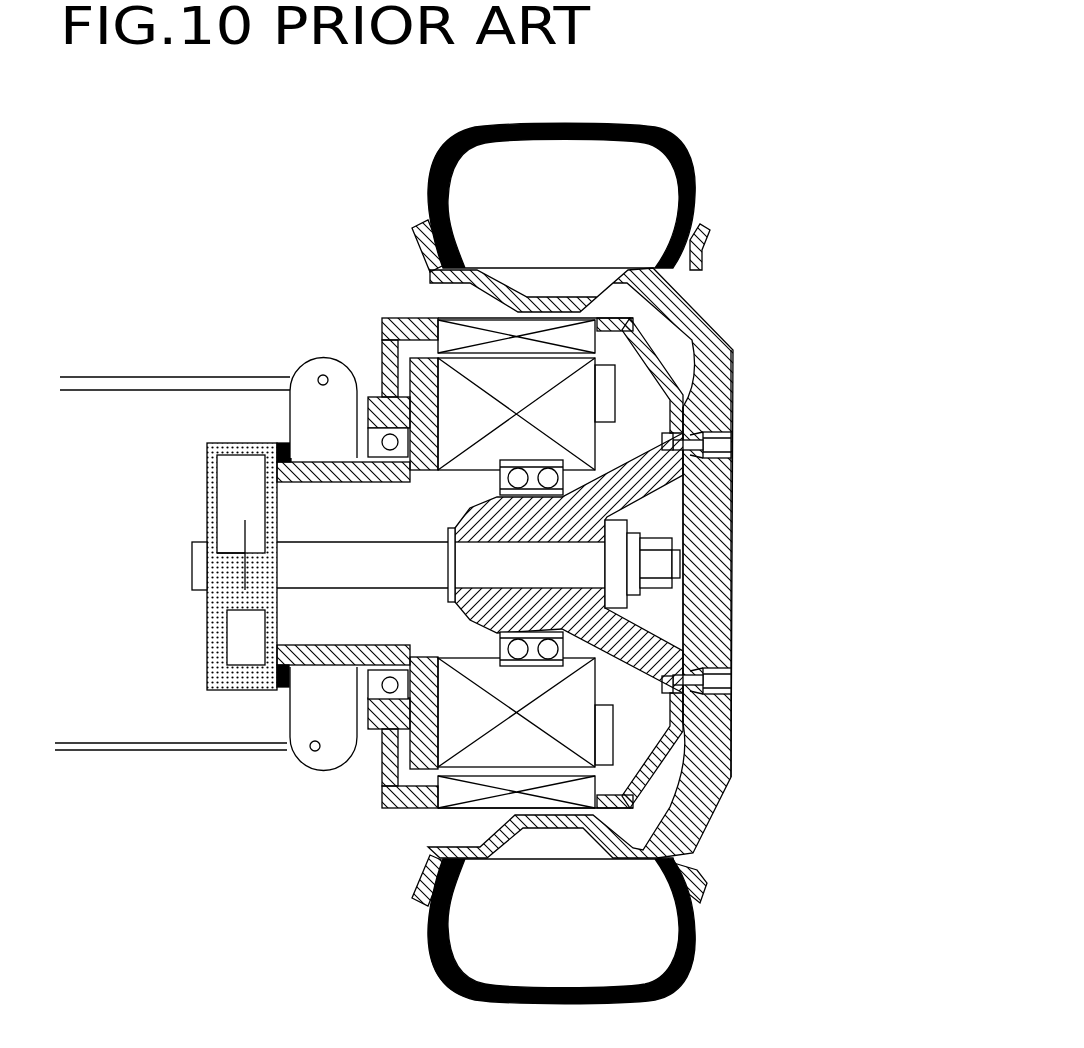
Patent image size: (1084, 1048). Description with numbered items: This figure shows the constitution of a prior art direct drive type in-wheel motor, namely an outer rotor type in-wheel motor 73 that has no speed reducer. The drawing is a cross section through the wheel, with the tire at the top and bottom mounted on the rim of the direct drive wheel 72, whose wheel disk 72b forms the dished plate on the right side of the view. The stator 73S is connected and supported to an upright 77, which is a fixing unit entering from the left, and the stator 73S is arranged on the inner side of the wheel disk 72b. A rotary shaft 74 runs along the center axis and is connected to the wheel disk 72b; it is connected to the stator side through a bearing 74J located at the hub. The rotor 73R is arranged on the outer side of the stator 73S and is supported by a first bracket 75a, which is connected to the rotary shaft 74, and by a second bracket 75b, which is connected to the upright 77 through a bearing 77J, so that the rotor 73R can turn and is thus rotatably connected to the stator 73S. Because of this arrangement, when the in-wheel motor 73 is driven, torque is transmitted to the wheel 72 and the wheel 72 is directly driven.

The direct drive wheel 72 is at (725, 560).
The wheel disk 72b is at (725, 757).
The in-wheel motor 73 is at (659, 522).
The rotor 73R is at (577, 333).
The stator 73S is at (573, 427).
The rotary shaft 74 is at (445, 522).
The bearing 74J is at (530, 477).
The first bracket 75a is at (662, 338).
The second bracket 75b is at (383, 325).
The upright 77 is at (307, 357).
The bearing 77J is at (360, 407).